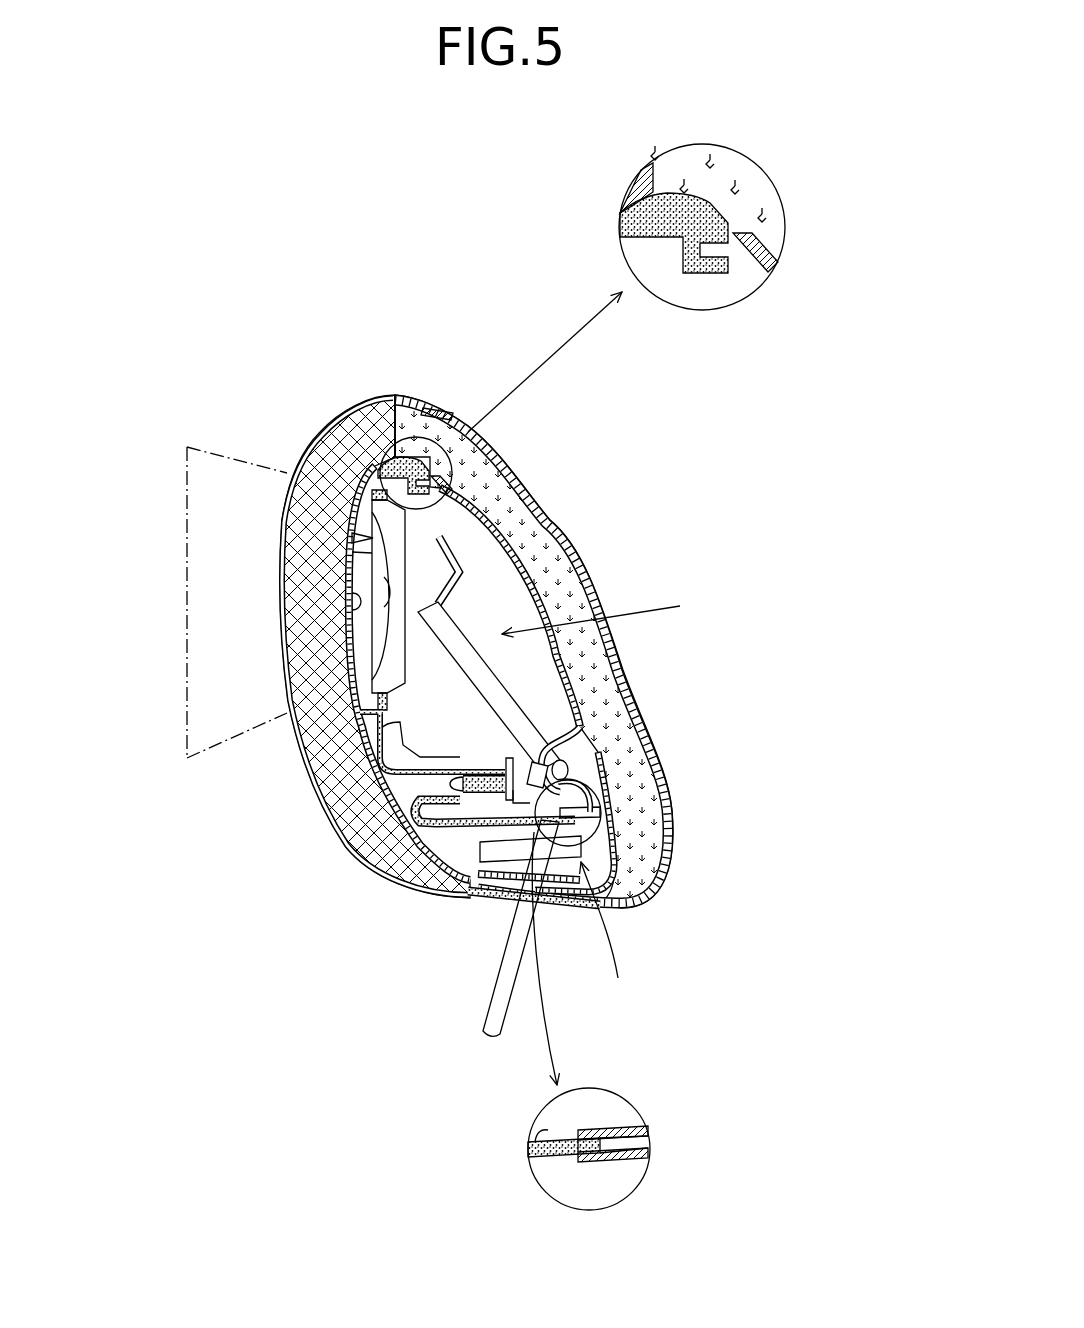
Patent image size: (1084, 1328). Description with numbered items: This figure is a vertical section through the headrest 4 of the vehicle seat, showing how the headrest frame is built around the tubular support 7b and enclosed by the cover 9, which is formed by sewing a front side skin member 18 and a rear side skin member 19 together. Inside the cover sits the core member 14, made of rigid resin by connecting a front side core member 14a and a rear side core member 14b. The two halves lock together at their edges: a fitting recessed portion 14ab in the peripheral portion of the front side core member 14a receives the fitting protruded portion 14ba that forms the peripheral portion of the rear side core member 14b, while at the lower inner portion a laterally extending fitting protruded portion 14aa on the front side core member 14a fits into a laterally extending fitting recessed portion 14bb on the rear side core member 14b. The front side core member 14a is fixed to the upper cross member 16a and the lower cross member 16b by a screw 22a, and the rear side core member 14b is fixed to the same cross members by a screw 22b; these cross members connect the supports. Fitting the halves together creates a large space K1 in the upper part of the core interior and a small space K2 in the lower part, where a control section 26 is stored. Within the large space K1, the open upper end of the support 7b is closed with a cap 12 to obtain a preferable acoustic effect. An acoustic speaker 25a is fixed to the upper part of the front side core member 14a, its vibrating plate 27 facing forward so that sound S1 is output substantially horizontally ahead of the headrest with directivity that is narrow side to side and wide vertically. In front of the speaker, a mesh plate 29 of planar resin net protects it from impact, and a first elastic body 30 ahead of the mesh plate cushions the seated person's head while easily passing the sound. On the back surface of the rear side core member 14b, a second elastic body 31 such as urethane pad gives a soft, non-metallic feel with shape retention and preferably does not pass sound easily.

The headrest 4 is at (219, 281).
The support 7b is at (493, 1012).
The cover 9 is at (507, 255).
The cap 12 is at (428, 612).
The core member 14 is at (518, 630).
The front side core member 14a is at (432, 461).
The fitting protruded portion 14aa is at (410, 890).
The fitting recessed portion 14ab is at (462, 527).
The rear side core member 14b is at (560, 705).
The fitting protruded portion 14ba is at (443, 480).
The fitting recessed portion 14bb is at (622, 860).
The upper cross member 16a is at (462, 578).
The lower cross member 16b is at (507, 758).
The front side skin member 18 is at (390, 395).
The rear side skin member 19 is at (457, 408).
The screw 22a is at (418, 783).
The screw 22b is at (567, 767).
The acoustic speaker 25a is at (337, 531).
The control section 26 is at (507, 847).
The vibrating plate 27 is at (356, 549).
The mesh plate 29 is at (356, 601).
The first elastic body 30 is at (290, 655).
The second elastic body 31 is at (637, 812).
The sound S1 is at (186, 494).
The large space K1 is at (640, 612).
The small space K2 is at (609, 934).